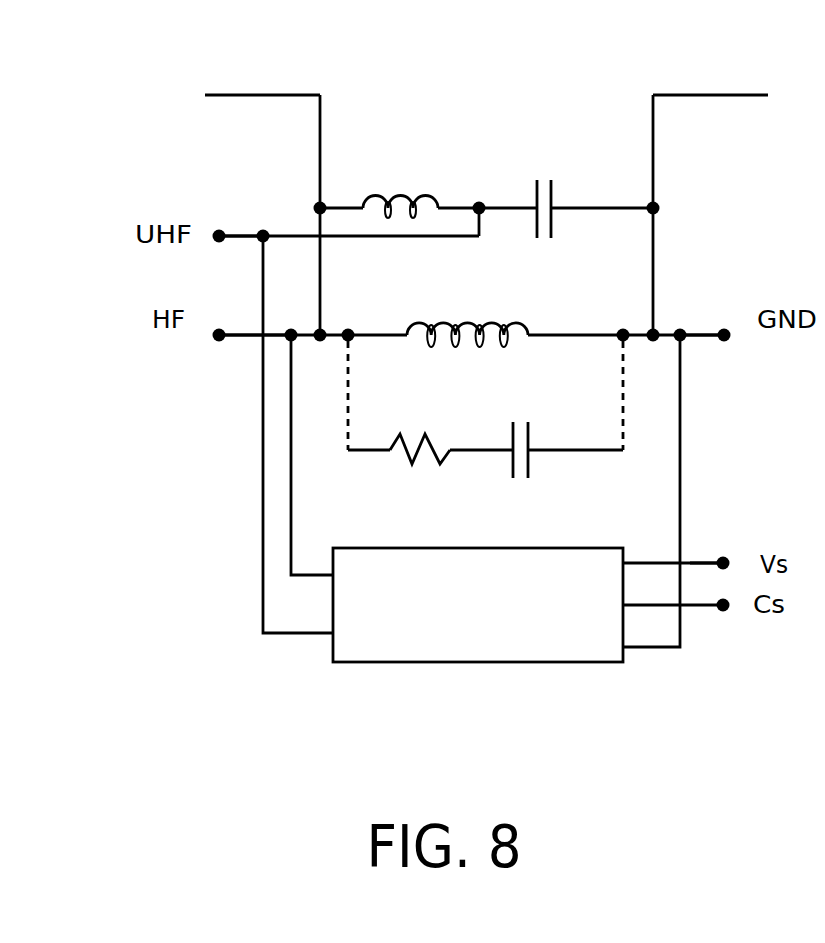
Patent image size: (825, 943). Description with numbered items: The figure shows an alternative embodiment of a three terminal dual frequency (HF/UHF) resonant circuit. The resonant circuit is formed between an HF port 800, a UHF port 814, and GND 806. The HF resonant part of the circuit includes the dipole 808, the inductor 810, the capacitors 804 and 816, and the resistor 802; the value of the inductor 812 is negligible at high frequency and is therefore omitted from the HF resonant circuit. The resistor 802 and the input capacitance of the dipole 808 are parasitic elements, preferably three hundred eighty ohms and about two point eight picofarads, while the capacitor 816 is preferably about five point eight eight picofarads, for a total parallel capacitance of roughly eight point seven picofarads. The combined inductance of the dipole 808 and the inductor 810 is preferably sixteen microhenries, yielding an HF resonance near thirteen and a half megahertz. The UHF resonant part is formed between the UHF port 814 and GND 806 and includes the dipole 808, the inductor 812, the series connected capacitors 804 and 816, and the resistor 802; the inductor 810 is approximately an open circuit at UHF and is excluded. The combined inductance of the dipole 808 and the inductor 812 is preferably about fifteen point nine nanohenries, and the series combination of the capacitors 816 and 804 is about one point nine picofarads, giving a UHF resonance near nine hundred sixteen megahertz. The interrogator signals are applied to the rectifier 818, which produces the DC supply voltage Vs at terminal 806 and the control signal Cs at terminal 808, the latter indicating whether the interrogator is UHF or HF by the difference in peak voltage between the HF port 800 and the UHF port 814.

The HF port 800 is at (218, 345).
The resistor 802 is at (425, 437).
The capacitor 804 is at (530, 432).
The GND 806 is at (686, 330).
The dipole 808 is at (260, 95).
The inductor 810 is at (455, 323).
The inductor 812 is at (375, 195).
The UHF port 814 is at (215, 230).
The capacitor 816 is at (553, 197).
The rectifier 818 is at (543, 548).